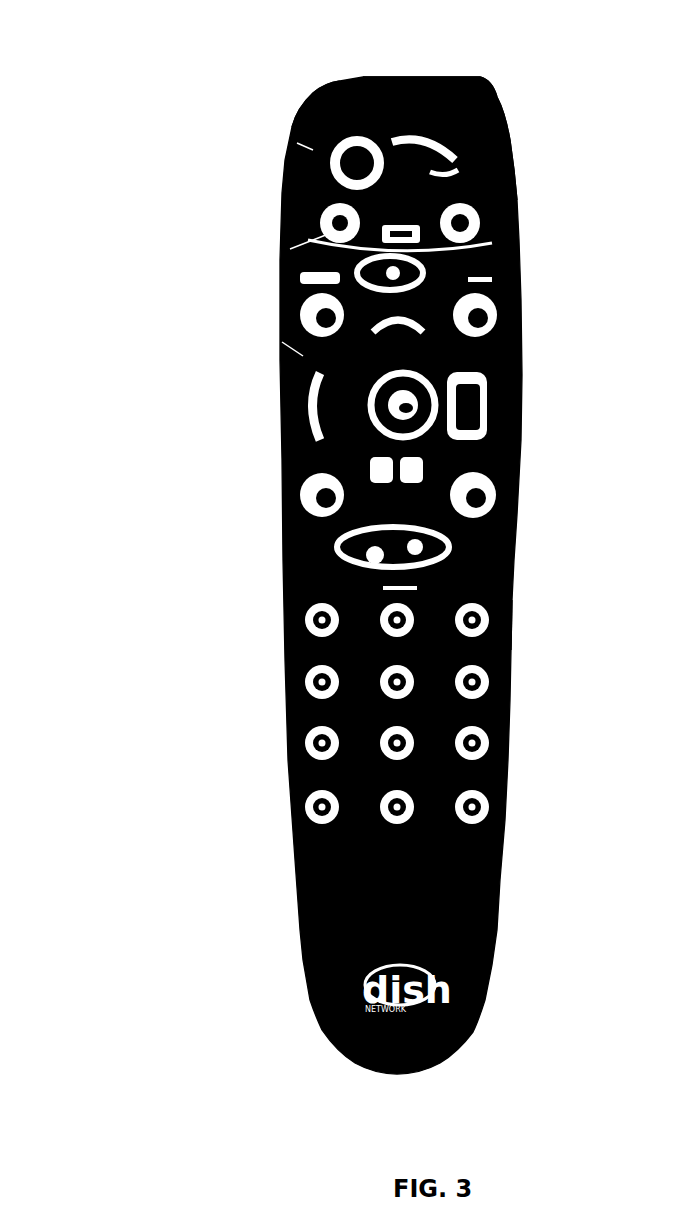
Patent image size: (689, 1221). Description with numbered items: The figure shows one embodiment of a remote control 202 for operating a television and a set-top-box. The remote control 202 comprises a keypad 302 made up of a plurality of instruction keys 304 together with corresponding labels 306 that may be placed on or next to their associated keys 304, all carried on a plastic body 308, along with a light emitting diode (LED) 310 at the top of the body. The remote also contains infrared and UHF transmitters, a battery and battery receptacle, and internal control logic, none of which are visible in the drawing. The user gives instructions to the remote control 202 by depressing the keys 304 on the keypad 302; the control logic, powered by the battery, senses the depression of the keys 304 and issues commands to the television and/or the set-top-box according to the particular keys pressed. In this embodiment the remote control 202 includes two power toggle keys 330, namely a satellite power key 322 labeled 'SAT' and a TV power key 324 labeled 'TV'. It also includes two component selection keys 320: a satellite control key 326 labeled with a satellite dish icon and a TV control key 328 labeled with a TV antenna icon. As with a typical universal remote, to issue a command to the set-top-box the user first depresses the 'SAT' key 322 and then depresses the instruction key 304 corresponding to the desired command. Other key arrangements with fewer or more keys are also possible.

The remote control 202 is at (270, 179).
The light emitting diode (LED) 310 is at (390, 77).
The power toggle keys 330 is at (310, 95).
The satellite power key 322 is at (296, 146).
The TV power key 324 is at (510, 133).
The TV control key 328 is at (516, 188).
The component selection keys 320 is at (288, 218).
The satellite control key 326 is at (289, 249).
The labels 306 is at (517, 515).
The keypad 302 is at (291, 352).
The instruction keys 304 is at (288, 500).
The plastic body 308 is at (513, 583).